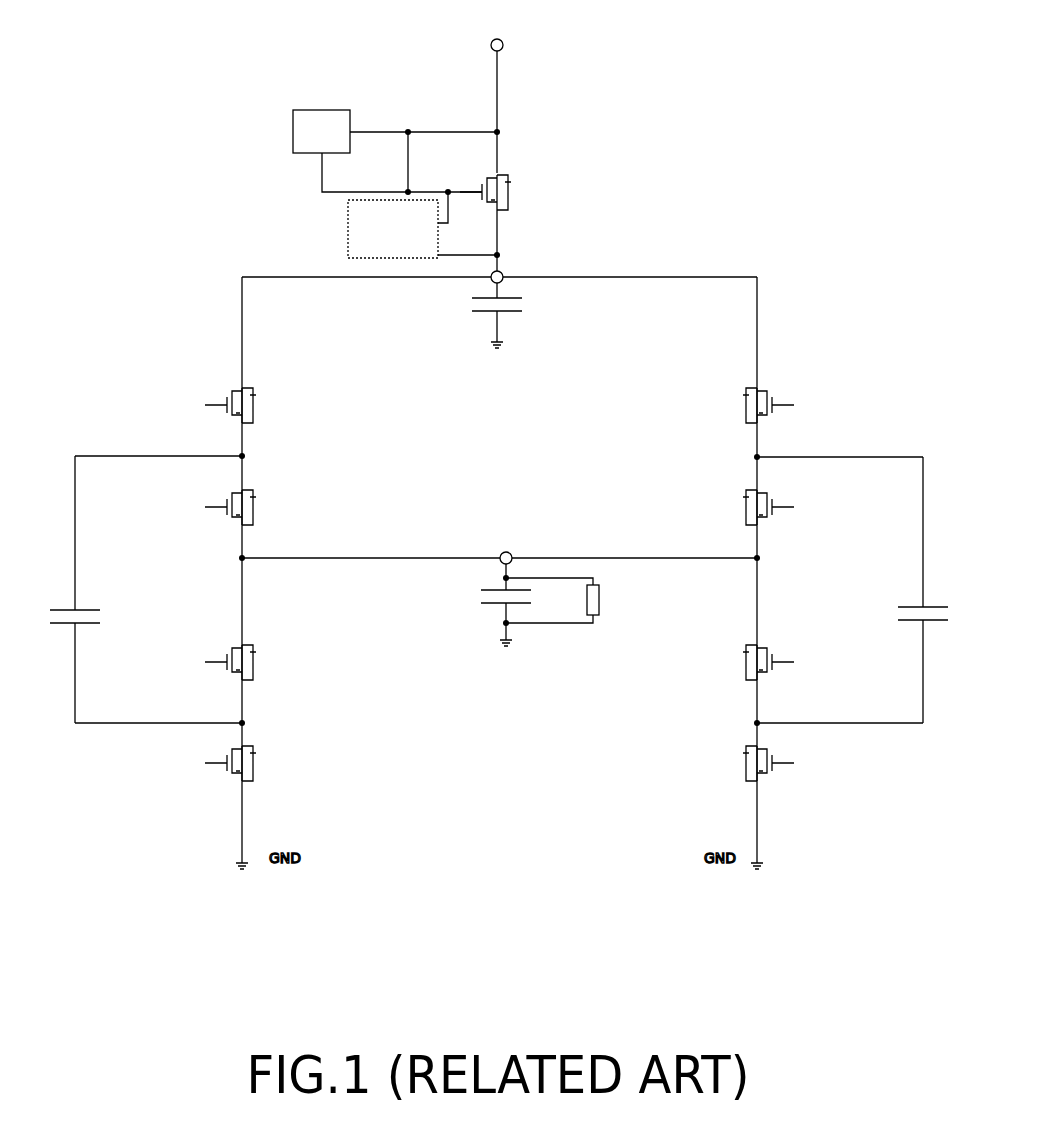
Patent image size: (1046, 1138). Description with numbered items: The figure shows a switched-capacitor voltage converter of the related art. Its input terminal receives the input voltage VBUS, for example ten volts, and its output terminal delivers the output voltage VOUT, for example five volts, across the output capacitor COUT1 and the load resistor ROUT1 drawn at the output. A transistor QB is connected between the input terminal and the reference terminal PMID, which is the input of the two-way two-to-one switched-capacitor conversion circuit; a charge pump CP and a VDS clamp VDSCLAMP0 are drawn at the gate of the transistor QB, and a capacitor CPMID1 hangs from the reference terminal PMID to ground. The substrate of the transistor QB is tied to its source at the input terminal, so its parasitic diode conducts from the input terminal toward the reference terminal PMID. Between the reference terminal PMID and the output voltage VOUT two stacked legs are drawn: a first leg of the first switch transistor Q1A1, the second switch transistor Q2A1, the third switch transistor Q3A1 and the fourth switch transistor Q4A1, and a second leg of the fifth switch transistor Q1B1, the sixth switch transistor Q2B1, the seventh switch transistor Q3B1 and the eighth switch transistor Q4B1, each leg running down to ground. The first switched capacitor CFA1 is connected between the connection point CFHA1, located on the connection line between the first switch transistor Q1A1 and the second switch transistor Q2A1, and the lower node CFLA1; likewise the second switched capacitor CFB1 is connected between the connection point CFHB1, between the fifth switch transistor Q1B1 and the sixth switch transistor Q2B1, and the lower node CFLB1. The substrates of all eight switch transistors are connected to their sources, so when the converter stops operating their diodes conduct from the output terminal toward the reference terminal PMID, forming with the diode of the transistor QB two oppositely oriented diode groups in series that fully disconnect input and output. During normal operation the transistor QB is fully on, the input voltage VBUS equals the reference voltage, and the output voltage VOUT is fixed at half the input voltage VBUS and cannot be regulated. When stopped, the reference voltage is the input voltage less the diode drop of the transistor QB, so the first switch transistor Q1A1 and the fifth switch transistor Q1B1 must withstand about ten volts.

The input voltage VBUS is at (502, 95).
The charge pump CP is at (396, 152).
The VDS clamp circuit VDSCLAMP0 is at (424, 225).
The transistor QB is at (503, 223).
The reference terminal PMID is at (499, 268).
The PMID capacitor CPMID1 is at (533, 315).
The first switch transistor Q1A1 is at (245, 397).
The second switch transistor Q2A1 is at (241, 500).
The third switch transistor Q3A1 is at (241, 656).
The fourth switch transistor Q4A1 is at (242, 759).
The connection point CFHA1 is at (160, 447).
The flying capacitor low node phase A CFLA1 is at (160, 713).
The first switched capacitor CFA1 is at (101, 589).
The fifth switch transistor Q1B1 is at (756, 398).
The sixth switch transistor Q2B1 is at (760, 500).
The seventh switch transistor Q3B1 is at (759, 656).
The eighth switch transistor Q4B1 is at (757, 759).
The connection point CFHB1 is at (838, 447).
The flying capacitor low node phase B CFLB1 is at (838, 713).
The second switched capacitor CFB1 is at (898, 590).
The output voltage VOUT is at (499, 545).
The output capacitor COUT1 is at (492, 606).
The output load resistor ROUT1 is at (584, 600).